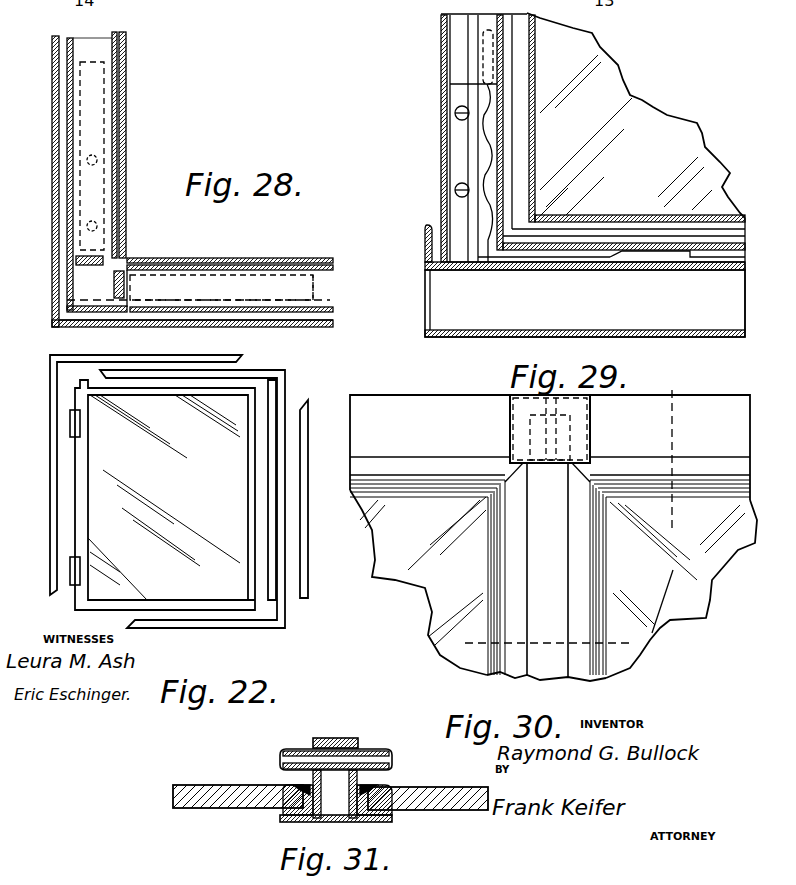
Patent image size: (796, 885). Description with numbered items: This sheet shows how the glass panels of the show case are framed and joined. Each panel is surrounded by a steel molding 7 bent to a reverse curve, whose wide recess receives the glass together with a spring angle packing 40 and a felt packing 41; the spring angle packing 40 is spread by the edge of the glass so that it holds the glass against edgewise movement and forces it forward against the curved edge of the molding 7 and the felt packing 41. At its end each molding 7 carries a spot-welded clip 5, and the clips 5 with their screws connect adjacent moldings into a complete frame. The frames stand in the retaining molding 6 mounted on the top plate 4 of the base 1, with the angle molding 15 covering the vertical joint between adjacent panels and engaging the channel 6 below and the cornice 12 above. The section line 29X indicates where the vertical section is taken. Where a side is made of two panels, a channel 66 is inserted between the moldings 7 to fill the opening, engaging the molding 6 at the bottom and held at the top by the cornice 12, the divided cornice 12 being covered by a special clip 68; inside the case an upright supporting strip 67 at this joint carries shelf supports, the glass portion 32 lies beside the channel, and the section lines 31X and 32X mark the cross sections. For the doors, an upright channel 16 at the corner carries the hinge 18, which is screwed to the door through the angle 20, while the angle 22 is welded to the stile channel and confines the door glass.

In FIG. 29, the base section 1 is at (425, 292).
In FIG. 29, the top plate 4 is at (742, 268).
In FIG. 28, the clip 5 is at (87, 181).
In FIG. 29, the clip 5 is at (480, 125).
In FIG. 28, the retaining molding 6 is at (55, 234).
In FIG. 29, the retaining molding 6 is at (426, 230).
In FIG. 28, the steel molding 7 is at (68, 250).
In FIG. 29, the steel molding 7 is at (743, 220).
In FIG. 30, the steel molding 7 is at (748, 520).
In FIG. 31, the steel molding 7 is at (282, 818).
In FIG. 30, the cornice 12 is at (440, 395).
In FIG. 28, the molding 15 is at (73, 275).
In FIG. 28, the upright channel 16 is at (329, 327).
In FIG. 22, the hinge 18 is at (70, 422).
In FIG. 22, the angle 20 is at (146, 465).
In FIG. 22, the angle 22 is at (270, 374).
In FIG. 28, the section line 29x-29x 29X is at (67, 301).
In FIG. 30, the section line 31x-31x 31X is at (546, 644).
In FIG. 30, the glass pane portion 32 is at (659, 587).
In FIG. 30, the section line 32x-32x 32X is at (670, 449).
In FIG. 31, the spring angle packing 40 is at (293, 788).
In FIG. 31, the felt packing 41 is at (298, 822).
In FIG. 30, the channel 66 is at (545, 670).
In FIG. 31, the channel 66 is at (350, 822).
In FIG. 31, the supporting strip 67 is at (355, 745).
In FIG. 30, the special clip 68 is at (588, 396).